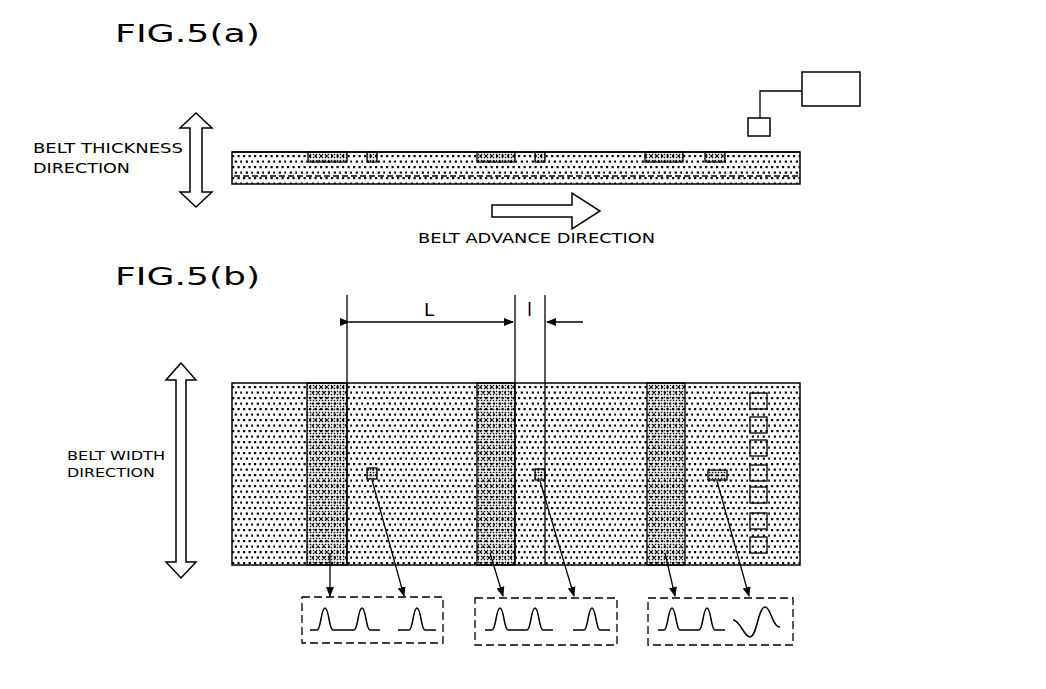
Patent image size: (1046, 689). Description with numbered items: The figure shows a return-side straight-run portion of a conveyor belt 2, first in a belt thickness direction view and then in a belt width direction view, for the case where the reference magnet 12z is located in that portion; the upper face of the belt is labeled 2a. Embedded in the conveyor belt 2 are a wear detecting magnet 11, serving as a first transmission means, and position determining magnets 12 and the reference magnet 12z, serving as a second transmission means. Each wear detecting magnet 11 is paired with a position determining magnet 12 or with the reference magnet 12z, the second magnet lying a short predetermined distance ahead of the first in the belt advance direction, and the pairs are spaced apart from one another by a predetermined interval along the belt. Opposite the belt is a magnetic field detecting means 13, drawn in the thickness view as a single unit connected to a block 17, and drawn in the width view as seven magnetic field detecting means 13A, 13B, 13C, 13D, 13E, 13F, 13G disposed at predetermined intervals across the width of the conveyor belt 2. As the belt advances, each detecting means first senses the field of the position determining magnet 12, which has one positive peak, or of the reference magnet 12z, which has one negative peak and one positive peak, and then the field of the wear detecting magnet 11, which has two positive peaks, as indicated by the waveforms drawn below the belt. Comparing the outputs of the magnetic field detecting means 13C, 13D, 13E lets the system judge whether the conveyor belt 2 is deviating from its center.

In FIG. 5A, the conveyor belt 2 is at (395, 152).
In FIG. 5B, the conveyor belt 2 is at (576, 392).
In FIG. 5A, the belt surface 2a is at (257, 149).
In FIG. 5A, the wear detecting magnet 11 is at (327, 152).
In FIG. 5B, the wear detecting magnet 11 is at (318, 388).
In FIG. 5A, the position determining magnet 12 is at (372, 152).
In FIG. 5B, the position determining magnet 12 is at (372, 466).
In FIG. 5A, the reference magnet 12z is at (711, 152).
In FIG. 5B, the reference magnet 12z is at (716, 468).
In FIG. 5A, the magnetic field detecting means 13 is at (770, 125).
In FIG. 5B, the magnetic field detecting means 13A is at (758, 401).
In FIG. 5B, the magnetic field detecting means 13B is at (758, 425).
In FIG. 5B, the magnetic field detecting means 13C is at (758, 448).
In FIG. 5B, the magnetic field detecting means 13D is at (758, 473).
In FIG. 5B, the magnetic field detecting means 13E is at (758, 495).
In FIG. 5B, the magnetic field detecting means 13F is at (758, 521).
In FIG. 5B, the magnetic field detecting means 13G is at (758, 547).
In FIG. 5A, the controller 17 is at (816, 72).